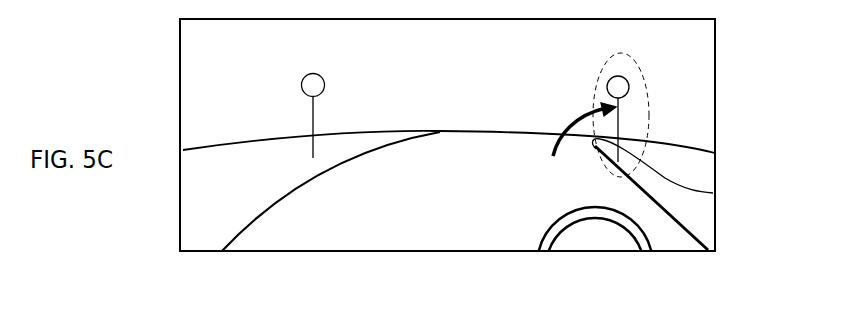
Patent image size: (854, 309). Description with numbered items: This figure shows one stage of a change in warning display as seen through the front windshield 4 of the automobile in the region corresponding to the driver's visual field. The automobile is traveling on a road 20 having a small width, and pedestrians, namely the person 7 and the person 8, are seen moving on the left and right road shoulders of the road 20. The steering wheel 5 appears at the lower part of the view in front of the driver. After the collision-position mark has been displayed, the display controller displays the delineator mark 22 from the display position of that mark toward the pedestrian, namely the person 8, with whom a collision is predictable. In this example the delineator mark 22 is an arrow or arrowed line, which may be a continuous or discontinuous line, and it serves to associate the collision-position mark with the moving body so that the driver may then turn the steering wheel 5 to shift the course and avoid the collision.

The front windshield 4 is at (716, 88).
The steering wheel 5 is at (647, 237).
The person 7 is at (302, 85).
The person 8 is at (618, 87).
The road 20 is at (433, 243).
The delineator mark 22 is at (713, 193).